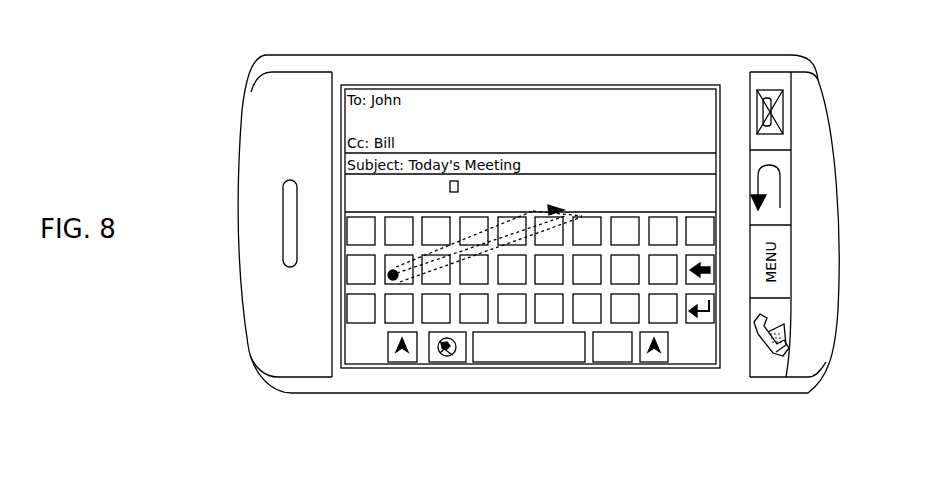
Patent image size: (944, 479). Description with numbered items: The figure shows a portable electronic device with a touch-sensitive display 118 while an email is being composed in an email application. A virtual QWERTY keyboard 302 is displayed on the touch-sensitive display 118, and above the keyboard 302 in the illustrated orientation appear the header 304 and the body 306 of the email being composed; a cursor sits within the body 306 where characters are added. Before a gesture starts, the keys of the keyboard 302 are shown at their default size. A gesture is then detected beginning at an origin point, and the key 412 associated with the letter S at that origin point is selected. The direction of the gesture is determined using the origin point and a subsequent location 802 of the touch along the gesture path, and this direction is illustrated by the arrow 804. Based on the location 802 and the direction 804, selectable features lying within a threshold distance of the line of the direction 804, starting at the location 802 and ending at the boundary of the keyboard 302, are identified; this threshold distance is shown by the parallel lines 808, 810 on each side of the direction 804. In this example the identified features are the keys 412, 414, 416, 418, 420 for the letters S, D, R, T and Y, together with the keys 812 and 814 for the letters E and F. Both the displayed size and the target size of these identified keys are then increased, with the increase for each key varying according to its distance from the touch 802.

The touch-sensitive display 118 is at (718, 193).
The virtual QWERTY keyboard 302 is at (461, 225).
The header 304 is at (368, 115).
The body 306 is at (388, 204).
The key 412 is at (398, 284).
The key 414 is at (435, 284).
The key 416 is at (473, 247).
The key 418 is at (510, 243).
The key 420 is at (548, 238).
The location 802 is at (393, 275).
The arrow 804 is at (445, 225).
The parallel line 808 is at (492, 228).
The parallel line 810 is at (560, 203).
The key 812 is at (435, 213).
The key 814 is at (475, 284).